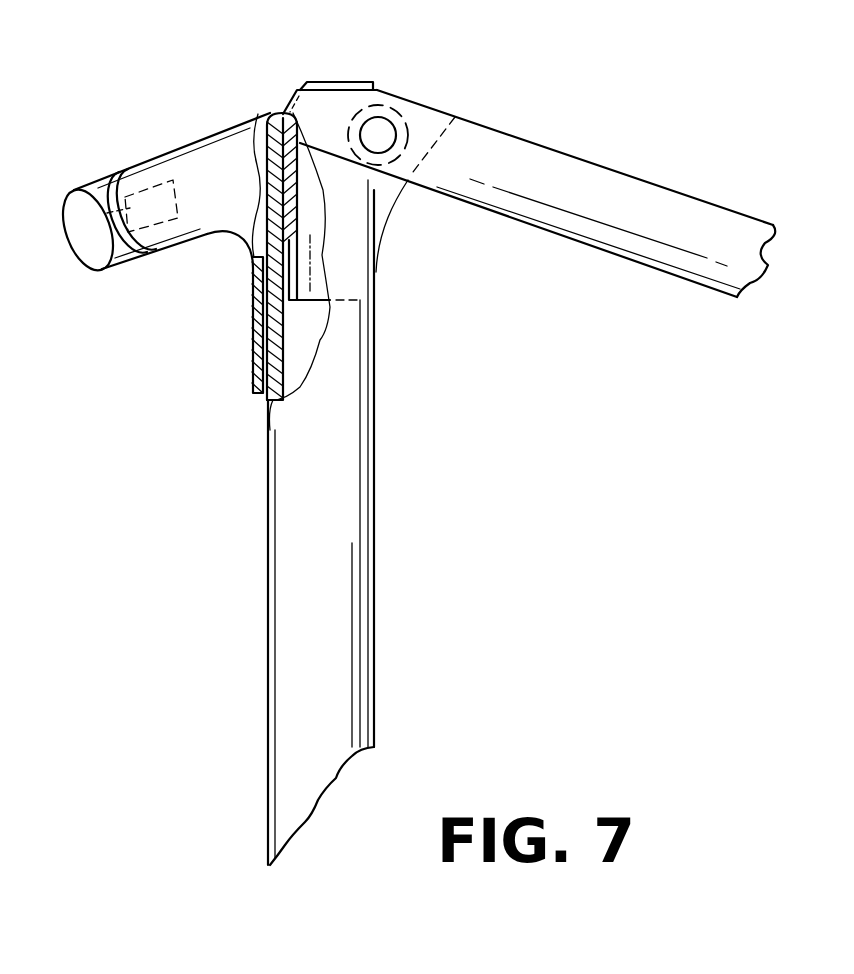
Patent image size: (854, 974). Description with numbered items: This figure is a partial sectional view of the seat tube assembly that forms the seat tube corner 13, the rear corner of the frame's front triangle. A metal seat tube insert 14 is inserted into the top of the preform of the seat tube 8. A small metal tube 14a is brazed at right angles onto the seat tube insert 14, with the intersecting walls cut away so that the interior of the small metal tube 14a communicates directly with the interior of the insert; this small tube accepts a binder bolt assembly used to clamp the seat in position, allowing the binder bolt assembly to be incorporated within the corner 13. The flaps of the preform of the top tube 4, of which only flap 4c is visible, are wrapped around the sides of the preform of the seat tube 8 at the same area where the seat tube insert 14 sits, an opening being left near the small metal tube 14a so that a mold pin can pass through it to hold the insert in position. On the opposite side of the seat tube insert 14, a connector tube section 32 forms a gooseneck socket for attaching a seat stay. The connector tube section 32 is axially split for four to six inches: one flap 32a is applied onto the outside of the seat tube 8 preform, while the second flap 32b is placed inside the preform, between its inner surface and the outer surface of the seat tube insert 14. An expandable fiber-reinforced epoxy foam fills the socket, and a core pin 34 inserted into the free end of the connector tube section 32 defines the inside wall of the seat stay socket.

The seat tube corner 13 is at (277, 80).
The flap of top tube preform 4c is at (330, 107).
The small metal tube 14a is at (390, 105).
The top tube 4 is at (553, 163).
The connector tube section 32 is at (193, 155).
The core pin 34 is at (88, 250).
The second flap of connector tube section 32b is at (263, 290).
The first flap of connector tube section 32a is at (258, 345).
The seat tube insert 14 is at (308, 306).
The seat tube 8 is at (293, 557).